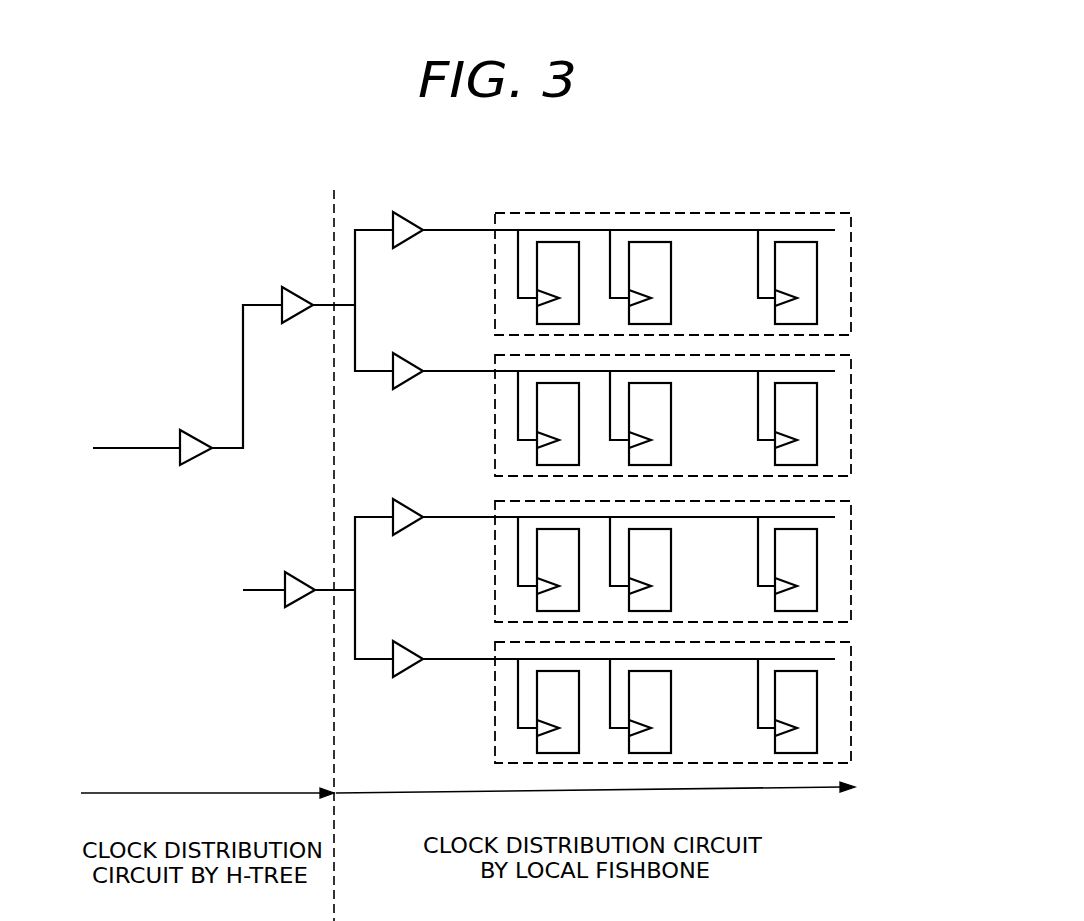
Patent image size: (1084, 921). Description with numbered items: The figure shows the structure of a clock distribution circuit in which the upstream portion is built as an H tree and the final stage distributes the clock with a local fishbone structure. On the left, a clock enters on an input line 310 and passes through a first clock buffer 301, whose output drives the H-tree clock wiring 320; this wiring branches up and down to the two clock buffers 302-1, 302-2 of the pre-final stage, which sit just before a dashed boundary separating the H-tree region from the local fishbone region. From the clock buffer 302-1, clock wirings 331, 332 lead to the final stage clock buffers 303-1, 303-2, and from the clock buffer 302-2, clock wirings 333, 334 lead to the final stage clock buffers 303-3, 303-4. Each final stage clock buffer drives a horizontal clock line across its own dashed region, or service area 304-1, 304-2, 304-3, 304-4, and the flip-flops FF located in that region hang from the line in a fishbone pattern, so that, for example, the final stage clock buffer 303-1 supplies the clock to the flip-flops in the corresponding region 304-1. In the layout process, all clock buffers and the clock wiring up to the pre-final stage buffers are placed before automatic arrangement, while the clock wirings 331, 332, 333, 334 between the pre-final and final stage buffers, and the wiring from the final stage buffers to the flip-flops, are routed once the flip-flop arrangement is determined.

The clock input line 310 is at (132, 447).
The clock buffer 301 is at (195, 463).
The H-tree clock wiring 320 is at (243, 353).
The clock buffer 302-1 is at (300, 287).
The clock buffer 302-2 is at (300, 607).
The final stage clock buffer 303-1 is at (434, 199).
The final stage clock buffer 303-2 is at (403, 389).
The final stage clock buffer 303-3 is at (435, 486).
The final stage clock buffer 303-4 is at (412, 677).
The clock wiring 331 is at (356, 275).
The clock wiring 332 is at (356, 330).
The clock wiring 333 is at (356, 557).
The clock wiring 334 is at (356, 614).
The region (service area) 304-1 is at (851, 248).
The region (service area) 304-2 is at (851, 390).
The region (service area) 304-3 is at (851, 536).
The region (service area) 304-4 is at (851, 678).